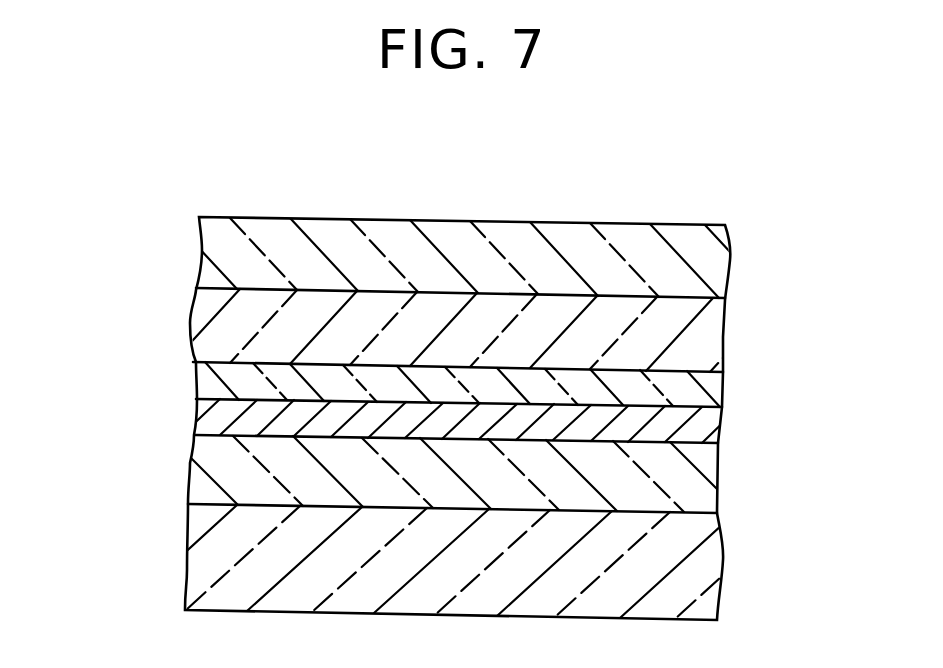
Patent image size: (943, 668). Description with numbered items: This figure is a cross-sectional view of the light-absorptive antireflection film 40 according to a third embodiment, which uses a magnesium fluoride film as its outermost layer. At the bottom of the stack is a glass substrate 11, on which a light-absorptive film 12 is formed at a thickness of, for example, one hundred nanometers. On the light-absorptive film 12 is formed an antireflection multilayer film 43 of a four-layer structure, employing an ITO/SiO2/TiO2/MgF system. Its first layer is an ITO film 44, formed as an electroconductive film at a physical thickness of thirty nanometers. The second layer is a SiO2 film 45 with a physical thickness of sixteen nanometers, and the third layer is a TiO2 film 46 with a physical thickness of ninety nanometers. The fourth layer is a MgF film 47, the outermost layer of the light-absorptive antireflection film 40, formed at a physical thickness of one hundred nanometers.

The light-absorptive antireflection film 40 is at (138, 502).
The antireflection multilayer film 43 is at (167, 215).
The MgF film 47 is at (717, 272).
The TiO2 film 46 is at (710, 337).
The SiO2 film 45 is at (707, 392).
The ITO film 44 is at (705, 432).
The light-absorptive film 12 is at (703, 475).
The glass substrate 11 is at (705, 563).